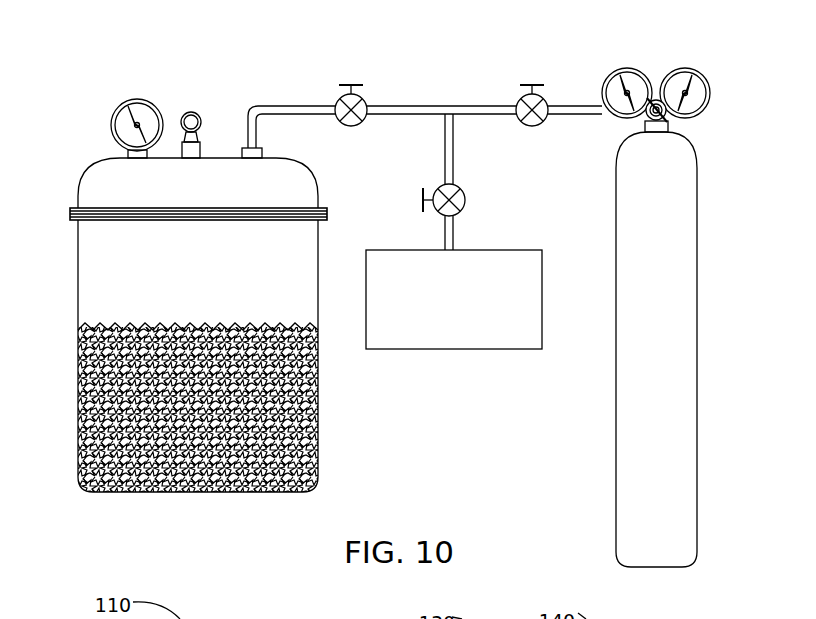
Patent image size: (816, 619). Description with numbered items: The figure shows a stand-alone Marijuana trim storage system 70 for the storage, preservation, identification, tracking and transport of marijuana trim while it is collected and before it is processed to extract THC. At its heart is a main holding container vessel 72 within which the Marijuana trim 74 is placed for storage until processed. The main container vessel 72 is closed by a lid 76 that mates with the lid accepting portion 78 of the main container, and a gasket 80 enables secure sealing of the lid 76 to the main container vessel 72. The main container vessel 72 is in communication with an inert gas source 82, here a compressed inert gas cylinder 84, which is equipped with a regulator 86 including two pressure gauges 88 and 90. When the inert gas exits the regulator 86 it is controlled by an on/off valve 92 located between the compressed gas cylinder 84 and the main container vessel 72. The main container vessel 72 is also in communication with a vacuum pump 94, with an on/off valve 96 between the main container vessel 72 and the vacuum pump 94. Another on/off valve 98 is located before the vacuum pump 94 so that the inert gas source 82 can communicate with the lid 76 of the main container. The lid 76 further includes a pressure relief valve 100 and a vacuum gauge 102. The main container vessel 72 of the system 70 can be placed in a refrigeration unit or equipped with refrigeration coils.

The stand-alone Marijuana trim storage system 70 is at (177, 69).
The main holding container vessel 72 is at (317, 377).
The Marijuana trim 74 is at (293, 440).
The lid 76 is at (102, 163).
The lid accepting portion 78 is at (100, 208).
The gasket 80 is at (70, 212).
The inert gas source 82 is at (665, 333).
The compressed inert gas cylinder 84 is at (698, 183).
The regulator 86 is at (667, 117).
The pressure gauge 88 is at (682, 68).
The pressure gauge 90 is at (628, 67).
The on/off valve 92 is at (542, 125).
The vacuum pump 94 is at (460, 349).
The on/off valve 96 is at (457, 187).
The on/off valve 98 is at (338, 100).
The pressure relief valve 100 is at (192, 112).
The vacuum gauge 102 is at (138, 98).